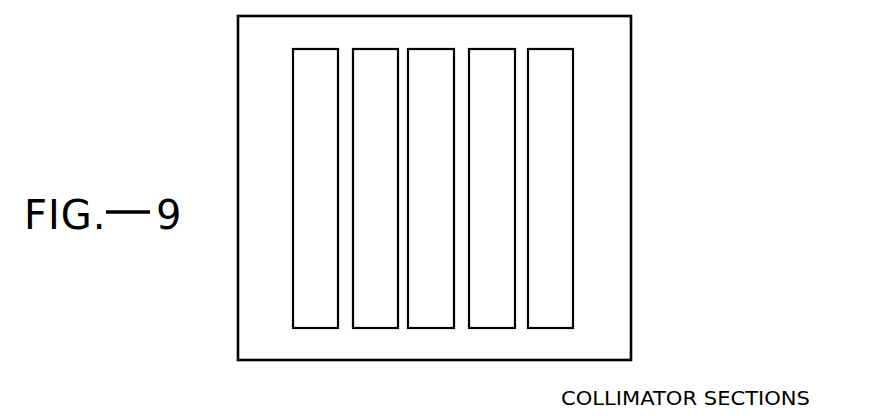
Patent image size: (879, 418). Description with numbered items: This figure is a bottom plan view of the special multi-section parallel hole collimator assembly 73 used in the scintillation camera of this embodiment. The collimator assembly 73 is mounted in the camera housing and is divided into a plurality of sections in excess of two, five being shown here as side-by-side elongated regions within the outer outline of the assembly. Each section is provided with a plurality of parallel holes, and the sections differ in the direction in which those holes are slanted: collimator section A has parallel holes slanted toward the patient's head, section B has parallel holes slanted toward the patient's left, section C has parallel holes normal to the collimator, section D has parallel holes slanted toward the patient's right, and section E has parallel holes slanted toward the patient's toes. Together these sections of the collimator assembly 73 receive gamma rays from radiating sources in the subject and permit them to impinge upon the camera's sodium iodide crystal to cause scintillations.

The collimator assembly 73 is at (638, 138).
The collimator section A is at (316, 314).
The collimator section B is at (376, 314).
The collimator section C is at (431, 314).
The collimator section D is at (493, 314).
The collimator section E is at (553, 314).